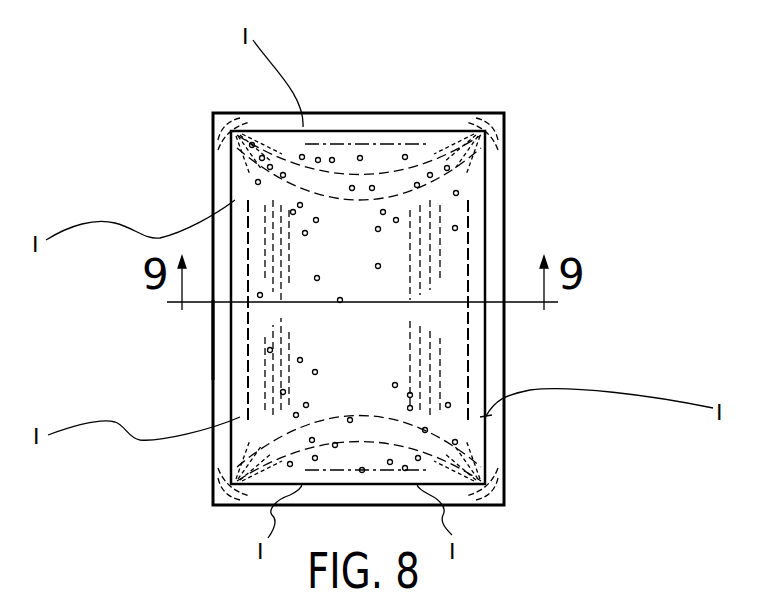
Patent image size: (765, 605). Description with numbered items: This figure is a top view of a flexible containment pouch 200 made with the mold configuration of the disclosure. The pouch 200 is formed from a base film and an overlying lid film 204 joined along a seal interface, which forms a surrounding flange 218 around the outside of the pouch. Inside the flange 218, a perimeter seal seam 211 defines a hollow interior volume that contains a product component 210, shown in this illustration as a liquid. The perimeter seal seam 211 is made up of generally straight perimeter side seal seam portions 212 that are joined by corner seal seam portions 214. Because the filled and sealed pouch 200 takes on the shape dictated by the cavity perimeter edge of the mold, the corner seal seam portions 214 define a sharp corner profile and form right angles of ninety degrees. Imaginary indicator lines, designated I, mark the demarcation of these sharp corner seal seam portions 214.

The pouch 200 is at (186, 122).
The lid film 204 is at (484, 268).
The product component 210 is at (248, 360).
The perimeter seal seam 211 is at (399, 118).
The perimeter side seal seam portions 212 is at (353, 128).
The corner seal seam portions 214 is at (253, 128).
The surrounding flange 218 is at (224, 340).